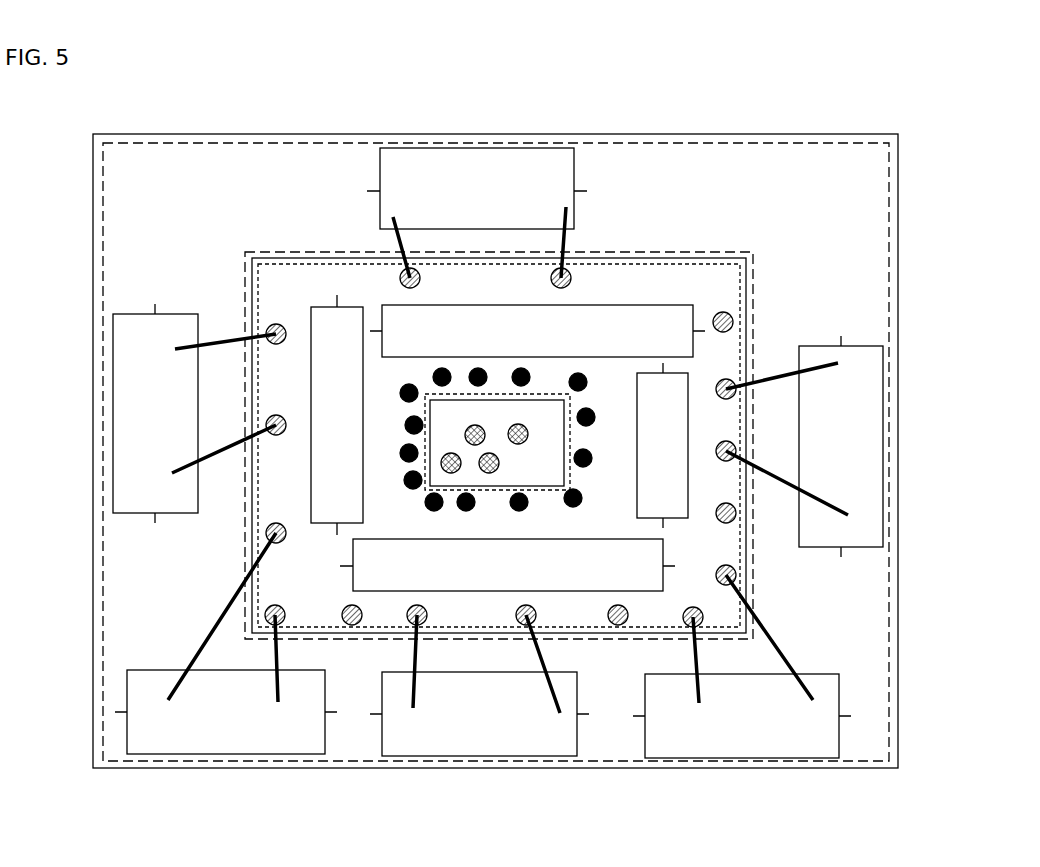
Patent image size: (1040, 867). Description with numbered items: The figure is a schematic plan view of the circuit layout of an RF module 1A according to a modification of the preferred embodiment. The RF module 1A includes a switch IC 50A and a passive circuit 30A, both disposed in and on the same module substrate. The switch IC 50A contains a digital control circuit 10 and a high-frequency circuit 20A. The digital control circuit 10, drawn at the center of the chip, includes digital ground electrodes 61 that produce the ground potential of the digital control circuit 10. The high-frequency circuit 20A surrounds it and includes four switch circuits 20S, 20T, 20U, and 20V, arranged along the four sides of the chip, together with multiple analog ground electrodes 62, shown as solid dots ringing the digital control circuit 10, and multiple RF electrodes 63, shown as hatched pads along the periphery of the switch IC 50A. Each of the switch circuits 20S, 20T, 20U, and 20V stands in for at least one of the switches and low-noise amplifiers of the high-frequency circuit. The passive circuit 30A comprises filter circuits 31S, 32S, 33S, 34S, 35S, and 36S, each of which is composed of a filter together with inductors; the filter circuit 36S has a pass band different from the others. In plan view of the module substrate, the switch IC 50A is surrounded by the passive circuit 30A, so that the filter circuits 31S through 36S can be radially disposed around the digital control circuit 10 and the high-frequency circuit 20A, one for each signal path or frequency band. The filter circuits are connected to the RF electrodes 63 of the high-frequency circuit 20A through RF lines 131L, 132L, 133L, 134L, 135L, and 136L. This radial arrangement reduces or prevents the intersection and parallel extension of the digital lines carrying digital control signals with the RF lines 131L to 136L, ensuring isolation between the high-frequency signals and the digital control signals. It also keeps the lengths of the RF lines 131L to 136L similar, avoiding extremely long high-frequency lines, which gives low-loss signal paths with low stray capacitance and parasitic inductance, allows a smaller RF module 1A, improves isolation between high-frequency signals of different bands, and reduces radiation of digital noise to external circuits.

The RF module 1A is at (858, 134).
The passive circuit 30A is at (891, 182).
The high-frequency circuit 20A is at (700, 266).
The switch IC 50A is at (752, 286).
The switch circuit 20U is at (645, 305).
The switch circuit 20V is at (320, 305).
The switch circuit 20T is at (688, 452).
The switch circuit 20S is at (665, 553).
The digital control circuit 10 is at (548, 396).
The digital ground electrodes 61 is at (518, 444).
The analog ground electrodes 62 is at (592, 412).
The RF electrodes 63 is at (270, 524).
The filter circuit 31S is at (325, 688).
The filter circuit 32S is at (578, 690).
The filter circuit 33S is at (840, 690).
The filter circuit 34S is at (843, 346).
The filter circuit 35S is at (577, 176).
The filter circuit 36S is at (140, 313).
The RF line 131L is at (273, 655).
The RF line 132L is at (540, 655).
The RF line 133L is at (698, 656).
The RF line 134L is at (768, 468).
The RF line 135L is at (562, 244).
The RF line 136L is at (232, 455).